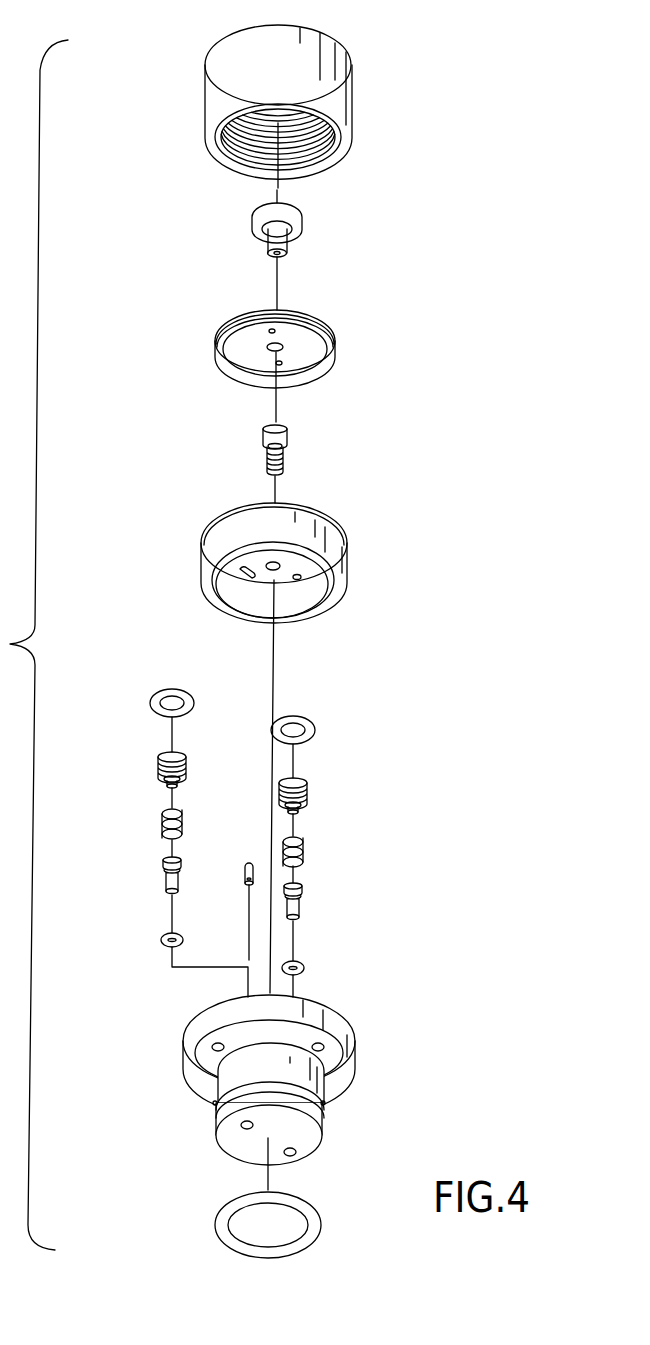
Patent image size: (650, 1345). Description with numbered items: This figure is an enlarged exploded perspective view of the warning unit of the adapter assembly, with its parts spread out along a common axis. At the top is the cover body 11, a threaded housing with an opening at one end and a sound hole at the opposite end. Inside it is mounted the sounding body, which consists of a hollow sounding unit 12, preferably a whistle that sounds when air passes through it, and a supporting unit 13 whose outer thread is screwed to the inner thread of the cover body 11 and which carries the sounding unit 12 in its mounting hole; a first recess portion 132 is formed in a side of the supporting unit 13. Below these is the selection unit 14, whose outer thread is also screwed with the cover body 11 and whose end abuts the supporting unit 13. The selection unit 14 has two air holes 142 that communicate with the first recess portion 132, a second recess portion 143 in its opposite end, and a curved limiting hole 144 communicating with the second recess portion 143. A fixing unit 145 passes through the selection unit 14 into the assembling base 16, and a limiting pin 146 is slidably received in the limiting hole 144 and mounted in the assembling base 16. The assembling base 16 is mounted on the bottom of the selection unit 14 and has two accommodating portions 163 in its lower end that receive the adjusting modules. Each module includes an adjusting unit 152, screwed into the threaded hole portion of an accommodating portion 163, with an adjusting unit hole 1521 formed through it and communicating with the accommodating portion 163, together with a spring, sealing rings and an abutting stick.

The cover body 11 is at (347, 90).
The sounding unit 12 is at (300, 221).
The supporting unit 13 is at (278, 351).
The first recess portion 132 is at (312, 362).
The fixing unit 145 is at (268, 452).
The selection unit 14 is at (277, 572).
The air holes 142 is at (302, 577).
The second recess portion 143 is at (293, 593).
The limiting hole 144 is at (237, 573).
The adjusting unit 152 is at (133, 789).
The adjusting unit hole 1521 is at (168, 787).
The limiting pin 146 is at (243, 872).
The assembling base 16 is at (274, 1084).
The accommodating portions 163 is at (243, 1128).